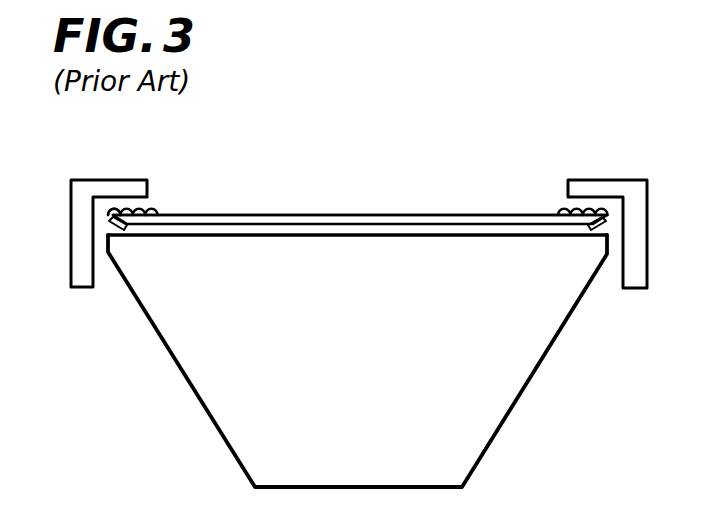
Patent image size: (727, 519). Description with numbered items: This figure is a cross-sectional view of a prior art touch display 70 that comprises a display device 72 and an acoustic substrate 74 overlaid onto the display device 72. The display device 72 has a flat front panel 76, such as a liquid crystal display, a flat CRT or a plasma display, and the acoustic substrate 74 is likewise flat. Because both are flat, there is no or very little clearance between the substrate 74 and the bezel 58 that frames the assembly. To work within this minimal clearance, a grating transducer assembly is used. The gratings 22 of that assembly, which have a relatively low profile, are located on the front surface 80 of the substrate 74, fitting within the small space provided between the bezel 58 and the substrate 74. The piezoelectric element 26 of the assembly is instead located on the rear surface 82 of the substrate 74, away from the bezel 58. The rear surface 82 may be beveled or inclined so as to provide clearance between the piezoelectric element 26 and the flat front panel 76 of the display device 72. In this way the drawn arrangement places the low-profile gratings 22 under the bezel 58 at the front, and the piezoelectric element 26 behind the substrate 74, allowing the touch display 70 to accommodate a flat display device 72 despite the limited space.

The gratings 22 is at (160, 210).
The piezoelectric element 26 is at (118, 232).
The bezel 58 is at (626, 180).
The touch display 70 is at (475, 163).
The display device 72 is at (490, 412).
The acoustic substrate 74 is at (345, 215).
The flat front panel 76 is at (269, 234).
The front surface 80 is at (408, 215).
The rear surface 82 is at (491, 233).